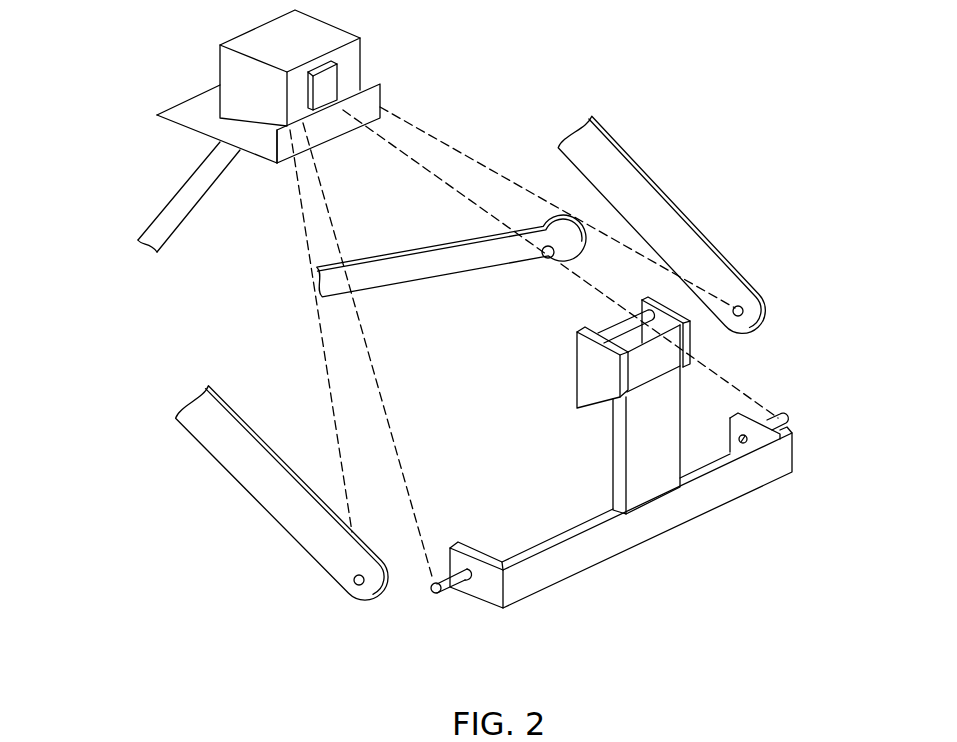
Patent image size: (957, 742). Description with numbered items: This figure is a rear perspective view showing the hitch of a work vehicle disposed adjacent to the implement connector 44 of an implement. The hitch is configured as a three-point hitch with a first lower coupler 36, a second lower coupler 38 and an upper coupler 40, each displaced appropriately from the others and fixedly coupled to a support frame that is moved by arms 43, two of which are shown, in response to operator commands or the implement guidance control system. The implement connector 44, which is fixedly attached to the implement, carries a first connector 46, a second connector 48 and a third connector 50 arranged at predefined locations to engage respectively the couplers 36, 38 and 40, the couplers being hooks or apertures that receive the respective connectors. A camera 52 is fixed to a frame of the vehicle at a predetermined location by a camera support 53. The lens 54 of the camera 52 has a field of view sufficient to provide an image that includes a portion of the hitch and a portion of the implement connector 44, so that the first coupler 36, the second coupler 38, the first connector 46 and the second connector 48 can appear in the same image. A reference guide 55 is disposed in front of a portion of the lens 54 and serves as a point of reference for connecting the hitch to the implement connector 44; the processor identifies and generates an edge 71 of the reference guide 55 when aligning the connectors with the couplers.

The first lower coupler 36 is at (362, 585).
The second lower coupler 38 is at (745, 310).
The upper coupler 40 is at (545, 265).
The arms 43 is at (663, 197).
The implement connector 44 is at (663, 567).
The first connector 46 is at (438, 595).
The second connector 48 is at (787, 420).
The third connector 50 is at (622, 327).
The camera 52 is at (310, 25).
The camera support 53 is at (142, 190).
The lens 54 is at (327, 88).
The reference guide 55 is at (282, 158).
The edge 71 is at (342, 103).